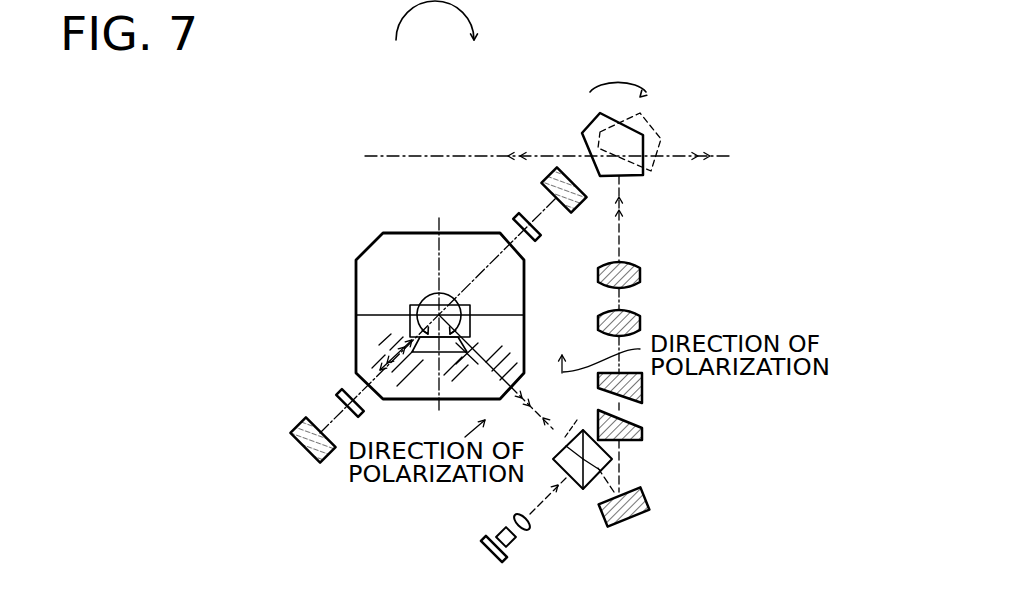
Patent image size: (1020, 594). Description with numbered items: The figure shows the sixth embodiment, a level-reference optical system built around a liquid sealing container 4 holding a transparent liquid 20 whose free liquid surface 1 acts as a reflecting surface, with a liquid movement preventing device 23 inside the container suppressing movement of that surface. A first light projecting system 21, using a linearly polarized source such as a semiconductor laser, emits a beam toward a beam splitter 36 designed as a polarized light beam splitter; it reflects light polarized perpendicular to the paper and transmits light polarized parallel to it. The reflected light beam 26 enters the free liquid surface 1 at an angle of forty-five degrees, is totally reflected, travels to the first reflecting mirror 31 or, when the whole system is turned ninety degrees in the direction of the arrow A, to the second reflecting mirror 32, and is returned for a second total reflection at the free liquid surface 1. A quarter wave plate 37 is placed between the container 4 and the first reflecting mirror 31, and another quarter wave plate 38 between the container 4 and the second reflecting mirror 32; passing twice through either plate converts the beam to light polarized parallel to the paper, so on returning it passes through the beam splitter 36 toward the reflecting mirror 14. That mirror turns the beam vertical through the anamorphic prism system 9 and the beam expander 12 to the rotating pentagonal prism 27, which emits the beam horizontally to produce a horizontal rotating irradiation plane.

The free liquid surface 1 is at (497, 313).
The liquid sealing container 4 is at (355, 280).
The anamorphic prism system 9 is at (654, 387).
The beam expander 12 is at (654, 280).
The reflecting mirror 14 is at (650, 497).
The transparent liquid 20 is at (370, 333).
The first light projecting system 21 is at (512, 495).
The liquid movement preventing device 23 is at (417, 300).
The reflected light beam 26 is at (577, 413).
The pentagonal prism 27 is at (582, 127).
The first reflecting mirror 31 is at (292, 447).
The second reflecting mirror 32 is at (548, 183).
The beam splitter 36 is at (572, 489).
The ¼ wave plate 37 is at (334, 390).
The ¼ wave plate 38 is at (516, 221).
The arrow A is at (396, 30).